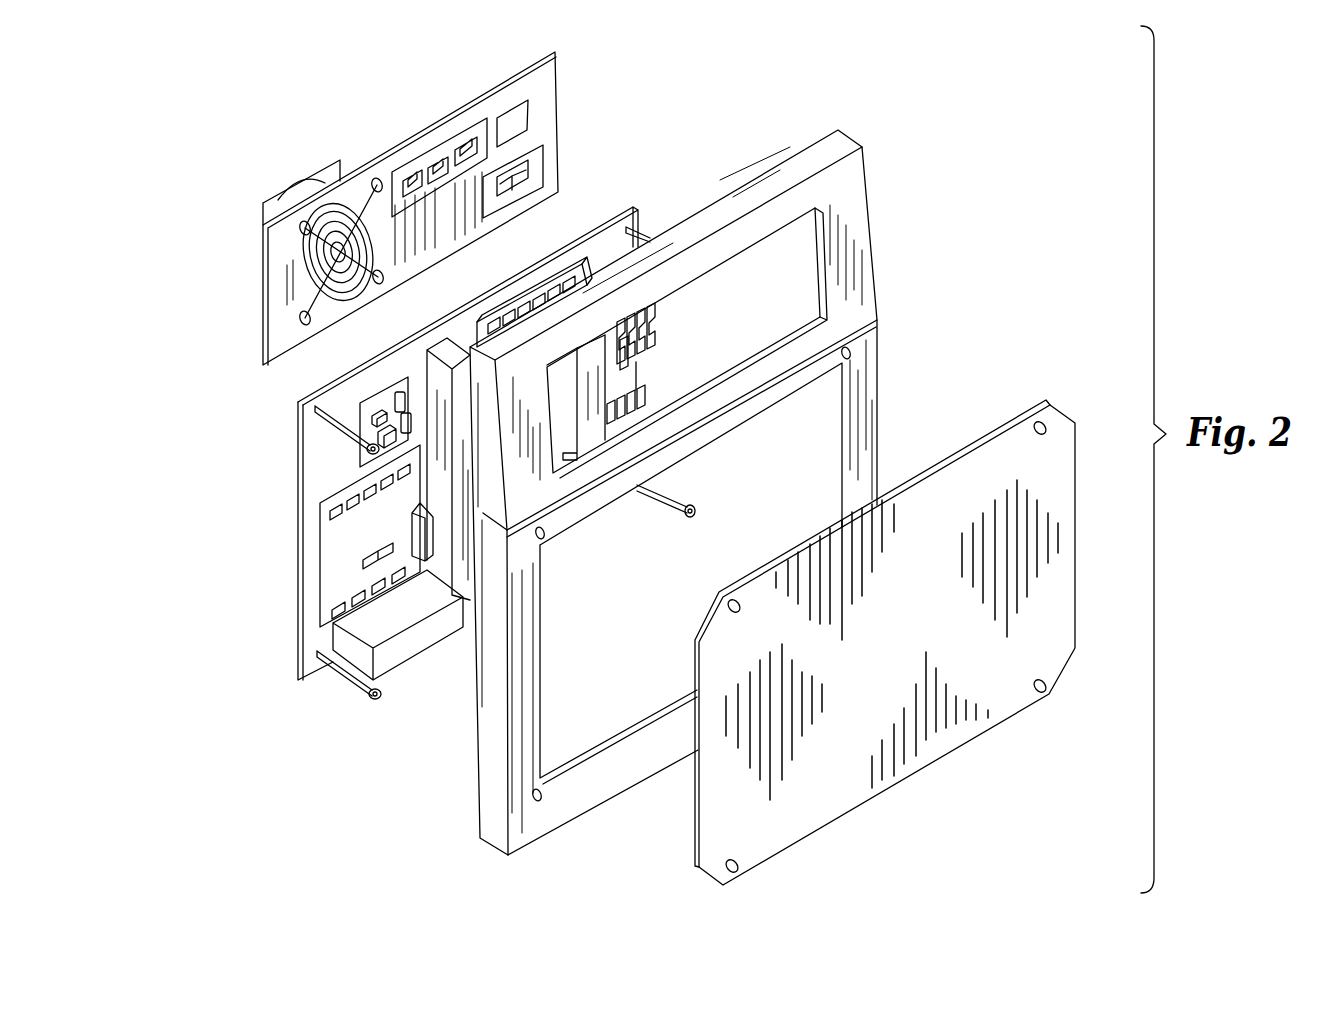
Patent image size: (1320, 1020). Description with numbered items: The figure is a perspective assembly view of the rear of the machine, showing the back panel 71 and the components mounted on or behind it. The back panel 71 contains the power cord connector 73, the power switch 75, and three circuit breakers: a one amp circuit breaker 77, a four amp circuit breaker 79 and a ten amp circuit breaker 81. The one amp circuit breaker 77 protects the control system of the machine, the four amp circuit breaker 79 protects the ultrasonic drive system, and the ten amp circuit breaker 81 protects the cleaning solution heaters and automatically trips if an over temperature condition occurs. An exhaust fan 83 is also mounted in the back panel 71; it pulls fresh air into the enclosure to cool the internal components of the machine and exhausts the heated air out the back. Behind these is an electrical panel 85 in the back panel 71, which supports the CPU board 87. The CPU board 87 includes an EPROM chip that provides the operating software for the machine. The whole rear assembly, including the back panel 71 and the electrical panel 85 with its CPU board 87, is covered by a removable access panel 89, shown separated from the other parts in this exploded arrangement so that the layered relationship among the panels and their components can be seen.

The back panel 71 is at (863, 235).
The power cord connector 73 is at (535, 162).
The power switch 75 is at (527, 105).
The one amp circuit breaker 77 is at (467, 147).
The four amp circuit breaker 79 is at (435, 163).
The ten amp circuit breaker 81 is at (400, 173).
The exhaust fan 83 is at (283, 192).
The electrical panel 85 is at (298, 458).
The CPU board 87 is at (333, 568).
The removable access panel 89 is at (946, 480).